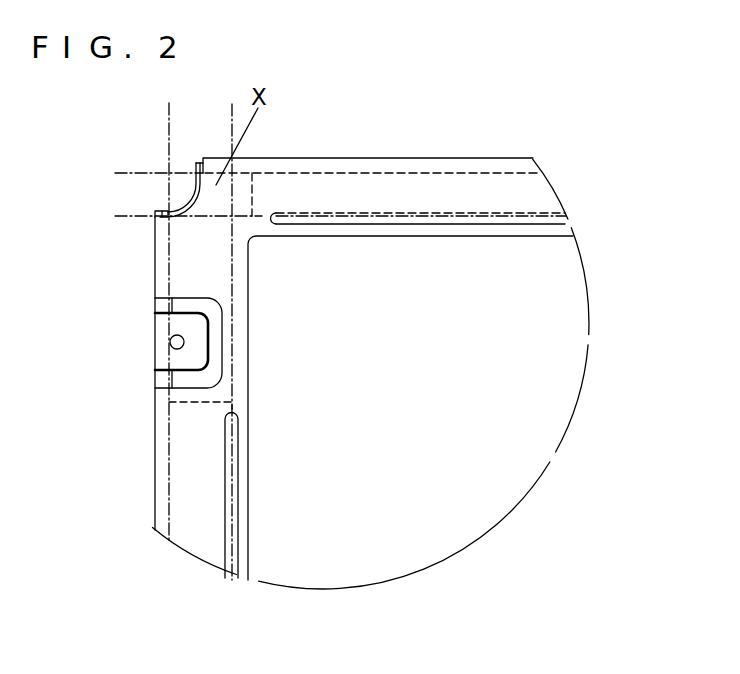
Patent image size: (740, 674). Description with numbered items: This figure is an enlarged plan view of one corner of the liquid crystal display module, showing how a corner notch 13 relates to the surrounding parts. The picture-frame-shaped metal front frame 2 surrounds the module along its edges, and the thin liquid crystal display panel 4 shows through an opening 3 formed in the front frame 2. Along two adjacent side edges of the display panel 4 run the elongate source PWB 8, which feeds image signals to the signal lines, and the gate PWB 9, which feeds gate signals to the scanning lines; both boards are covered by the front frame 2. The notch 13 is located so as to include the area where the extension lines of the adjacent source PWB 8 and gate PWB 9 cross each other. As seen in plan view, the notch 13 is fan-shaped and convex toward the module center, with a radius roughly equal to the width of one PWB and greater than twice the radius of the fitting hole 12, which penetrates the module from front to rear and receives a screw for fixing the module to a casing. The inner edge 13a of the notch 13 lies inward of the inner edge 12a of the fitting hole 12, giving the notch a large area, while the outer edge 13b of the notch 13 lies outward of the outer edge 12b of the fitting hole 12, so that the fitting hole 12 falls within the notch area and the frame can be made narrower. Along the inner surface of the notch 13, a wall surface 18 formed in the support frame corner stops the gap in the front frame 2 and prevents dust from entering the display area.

The front frame 2 is at (295, 157).
The opening 3 is at (362, 253).
The liquid crystal display panel 4 is at (410, 270).
The source PWB 8 is at (487, 173).
The gate PWB 9 is at (167, 427).
The fitting hole 12 is at (171, 347).
The inner edge of fitting hole 12a is at (185, 341).
The outer edge of fitting hole 12b is at (170, 341).
The notch 13 is at (183, 192).
The inner edge of notch 13a is at (199, 173).
The outer edge of notch 13b is at (154, 214).
The wall surface 18 is at (197, 186).